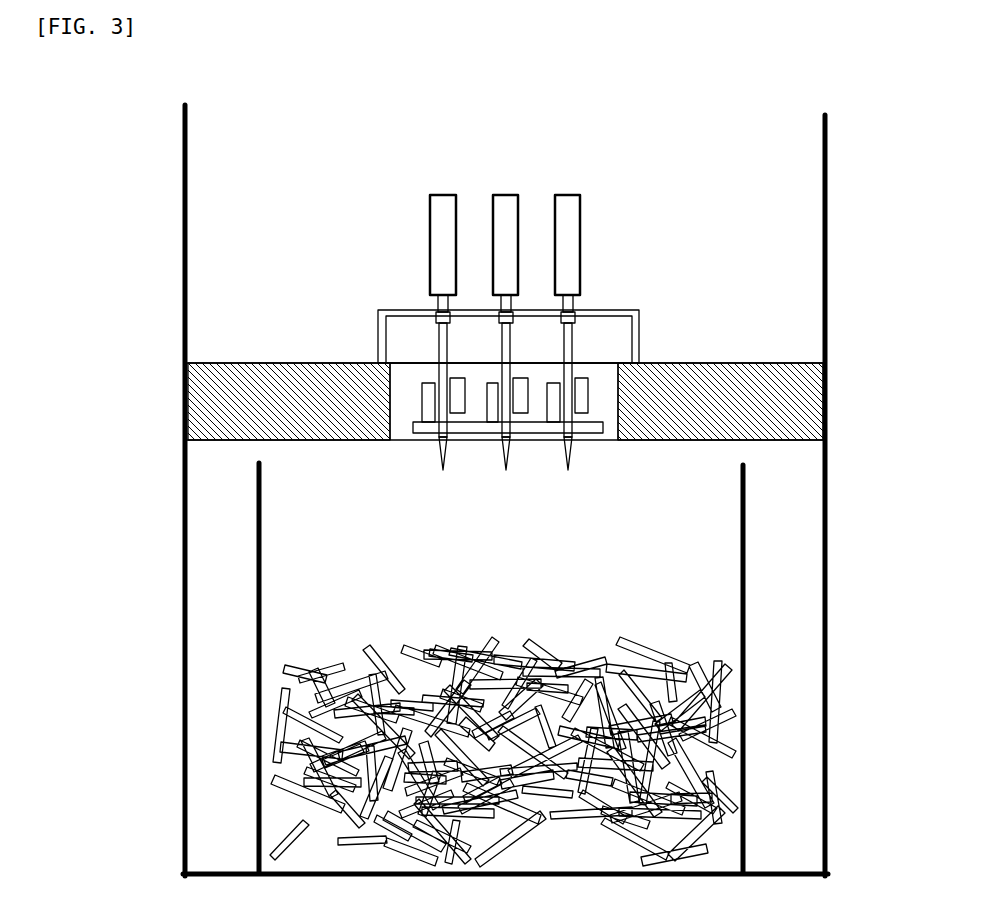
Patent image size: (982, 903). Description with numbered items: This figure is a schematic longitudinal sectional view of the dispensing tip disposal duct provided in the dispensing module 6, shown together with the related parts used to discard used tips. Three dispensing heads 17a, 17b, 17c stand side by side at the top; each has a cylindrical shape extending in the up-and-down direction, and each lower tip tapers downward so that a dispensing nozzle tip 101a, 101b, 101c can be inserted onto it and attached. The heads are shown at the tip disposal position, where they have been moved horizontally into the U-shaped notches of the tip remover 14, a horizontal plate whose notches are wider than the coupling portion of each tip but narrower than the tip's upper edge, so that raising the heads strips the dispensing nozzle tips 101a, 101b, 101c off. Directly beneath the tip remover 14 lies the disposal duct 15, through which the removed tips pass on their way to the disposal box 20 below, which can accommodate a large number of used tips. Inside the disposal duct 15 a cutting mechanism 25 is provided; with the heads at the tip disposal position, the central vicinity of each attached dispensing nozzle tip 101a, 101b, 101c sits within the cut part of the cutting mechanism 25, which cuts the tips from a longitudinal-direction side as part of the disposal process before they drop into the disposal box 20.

The dispensing module 6 is at (185, 235).
The tip remover 14 is at (639, 333).
The disposal duct 15 is at (607, 390).
The dispensing head 17a is at (442, 200).
The dispensing head 17b is at (505, 200).
The dispensing head 17c is at (569, 200).
The disposal box 20 is at (745, 552).
The cutting mechanism 25 is at (428, 398).
The dispensing nozzle tip 101a is at (568, 352).
The dispensing nozzle tip 101b is at (507, 352).
The dispensing nozzle tip 101c is at (440, 352).